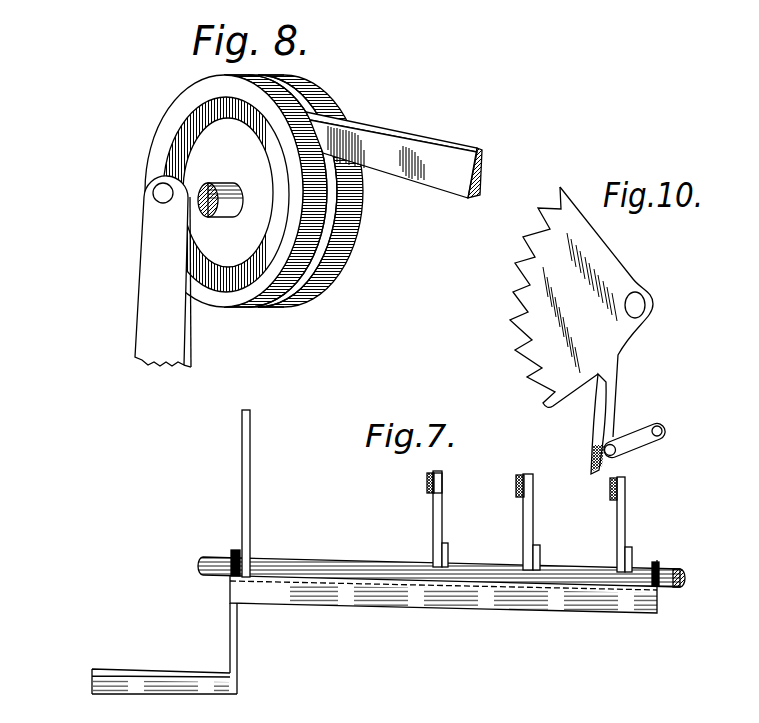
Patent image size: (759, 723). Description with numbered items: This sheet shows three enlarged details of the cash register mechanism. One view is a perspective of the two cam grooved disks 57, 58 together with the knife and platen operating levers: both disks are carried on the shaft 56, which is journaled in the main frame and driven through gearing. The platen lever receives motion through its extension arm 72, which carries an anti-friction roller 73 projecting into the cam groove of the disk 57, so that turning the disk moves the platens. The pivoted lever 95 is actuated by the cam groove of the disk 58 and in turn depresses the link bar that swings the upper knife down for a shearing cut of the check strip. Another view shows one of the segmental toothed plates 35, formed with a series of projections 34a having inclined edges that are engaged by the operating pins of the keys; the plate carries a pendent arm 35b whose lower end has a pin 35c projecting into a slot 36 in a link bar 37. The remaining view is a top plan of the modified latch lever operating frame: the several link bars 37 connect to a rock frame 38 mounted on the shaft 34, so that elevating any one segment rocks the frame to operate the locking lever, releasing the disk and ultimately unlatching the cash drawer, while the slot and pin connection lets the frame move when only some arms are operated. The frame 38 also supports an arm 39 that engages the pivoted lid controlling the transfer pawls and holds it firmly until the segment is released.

In FIG. 7, the shaft 34 is at (202, 565).
In FIG. 10, the projections 34a is at (530, 292).
In FIG. 10, the segmental plate 35 is at (598, 312).
In FIG. 10, the pendent arm 35b is at (617, 393).
In FIG. 7, the pendent arm 35b is at (428, 480).
In FIG. 10, the pin 35c is at (591, 462).
In FIG. 7, the pin 35c is at (443, 482).
In FIG. 10, the slot 36 is at (614, 453).
In FIG. 10, the link bar 37 is at (632, 442).
In FIG. 7, the link bar 37 is at (443, 518).
In FIG. 7, the rock frame 38 is at (157, 673).
In FIG. 7, the arm 39 is at (257, 449).
In FIG. 8, the shaft 56 is at (238, 194).
In FIG. 8, the cam grooved disk 57 is at (161, 129).
In FIG. 8, the cam grooved disk 58 is at (328, 107).
In FIG. 8, the extension arm 72 is at (142, 288).
In FIG. 8, the anti-friction roller 73 is at (158, 194).
In FIG. 8, the pivoted lever 95 is at (430, 139).